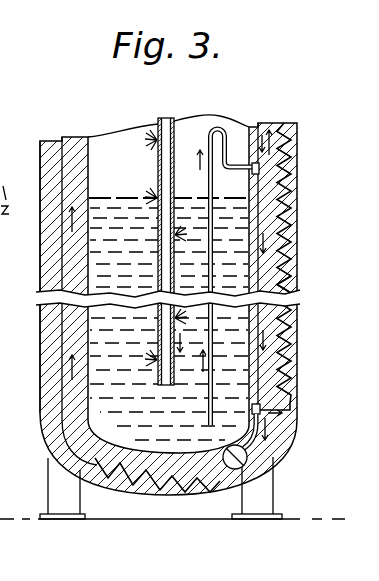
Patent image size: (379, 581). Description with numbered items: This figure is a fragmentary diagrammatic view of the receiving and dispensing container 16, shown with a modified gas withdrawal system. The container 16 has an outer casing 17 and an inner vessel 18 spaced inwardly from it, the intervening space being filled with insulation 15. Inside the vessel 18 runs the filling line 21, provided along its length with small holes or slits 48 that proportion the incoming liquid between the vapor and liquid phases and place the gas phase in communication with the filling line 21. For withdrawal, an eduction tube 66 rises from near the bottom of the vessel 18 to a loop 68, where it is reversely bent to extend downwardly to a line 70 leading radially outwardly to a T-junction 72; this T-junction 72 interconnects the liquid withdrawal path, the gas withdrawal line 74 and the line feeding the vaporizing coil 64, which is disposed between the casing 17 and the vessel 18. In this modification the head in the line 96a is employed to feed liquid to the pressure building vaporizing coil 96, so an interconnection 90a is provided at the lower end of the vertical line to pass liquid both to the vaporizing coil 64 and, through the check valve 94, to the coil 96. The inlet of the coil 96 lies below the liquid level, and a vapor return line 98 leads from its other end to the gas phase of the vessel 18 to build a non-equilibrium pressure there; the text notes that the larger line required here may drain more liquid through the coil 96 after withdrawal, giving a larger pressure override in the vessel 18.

The insulation 15 is at (72, 156).
The liquid receiving tank or container 16 is at (36, 325).
The outer casing 17 is at (40, 253).
The inner vessel 18 is at (62, 290).
The filling line 21 is at (160, 383).
The small holes or slits 48 is at (157, 198).
The vaporizing coil 64 is at (294, 262).
The eduction tube 66 is at (208, 184).
The loop 68 is at (216, 126).
The line 70 is at (248, 145).
The T-junction 72 is at (259, 168).
The gas withdrawal line 74 is at (264, 124).
The interconnection 90a is at (252, 411).
The check valve 94 is at (230, 469).
The vaporizing coil 96 is at (121, 482).
The line 96a is at (293, 286).
The vapor return line 98 is at (58, 155).